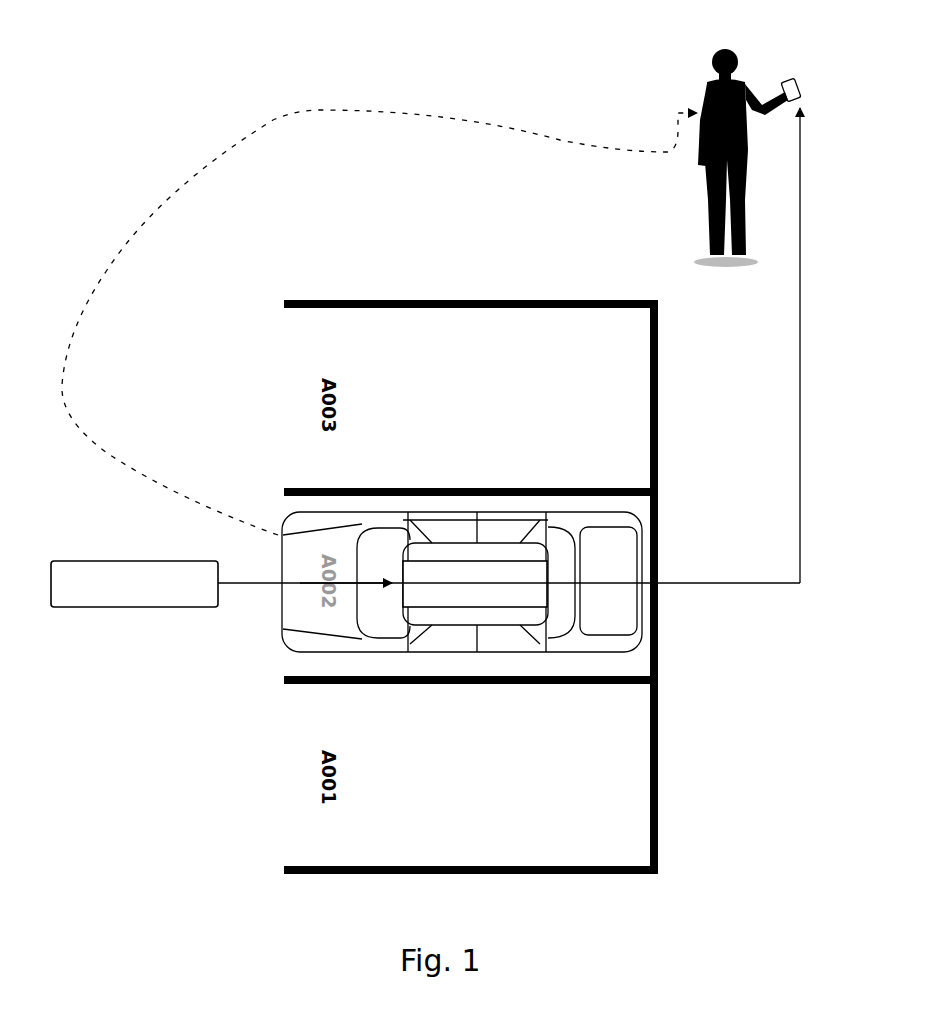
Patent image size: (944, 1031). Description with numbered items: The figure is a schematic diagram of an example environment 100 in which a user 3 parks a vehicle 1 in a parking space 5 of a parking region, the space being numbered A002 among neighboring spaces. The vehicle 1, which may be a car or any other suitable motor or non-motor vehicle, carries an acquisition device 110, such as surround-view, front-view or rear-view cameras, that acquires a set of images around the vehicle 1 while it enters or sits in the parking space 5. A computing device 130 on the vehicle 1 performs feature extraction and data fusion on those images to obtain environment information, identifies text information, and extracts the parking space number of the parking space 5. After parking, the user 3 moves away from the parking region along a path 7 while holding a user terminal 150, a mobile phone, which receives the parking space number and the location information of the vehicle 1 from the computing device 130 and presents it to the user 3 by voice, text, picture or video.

The example environment 100 is at (205, 103).
The vehicle 1 is at (485, 530).
The user 3 is at (733, 46).
The parking space 5 is at (645, 656).
The path 7 is at (388, 113).
The acquisition device 110 is at (155, 558).
The computing device 130 is at (468, 561).
The user terminal 150 is at (795, 83).